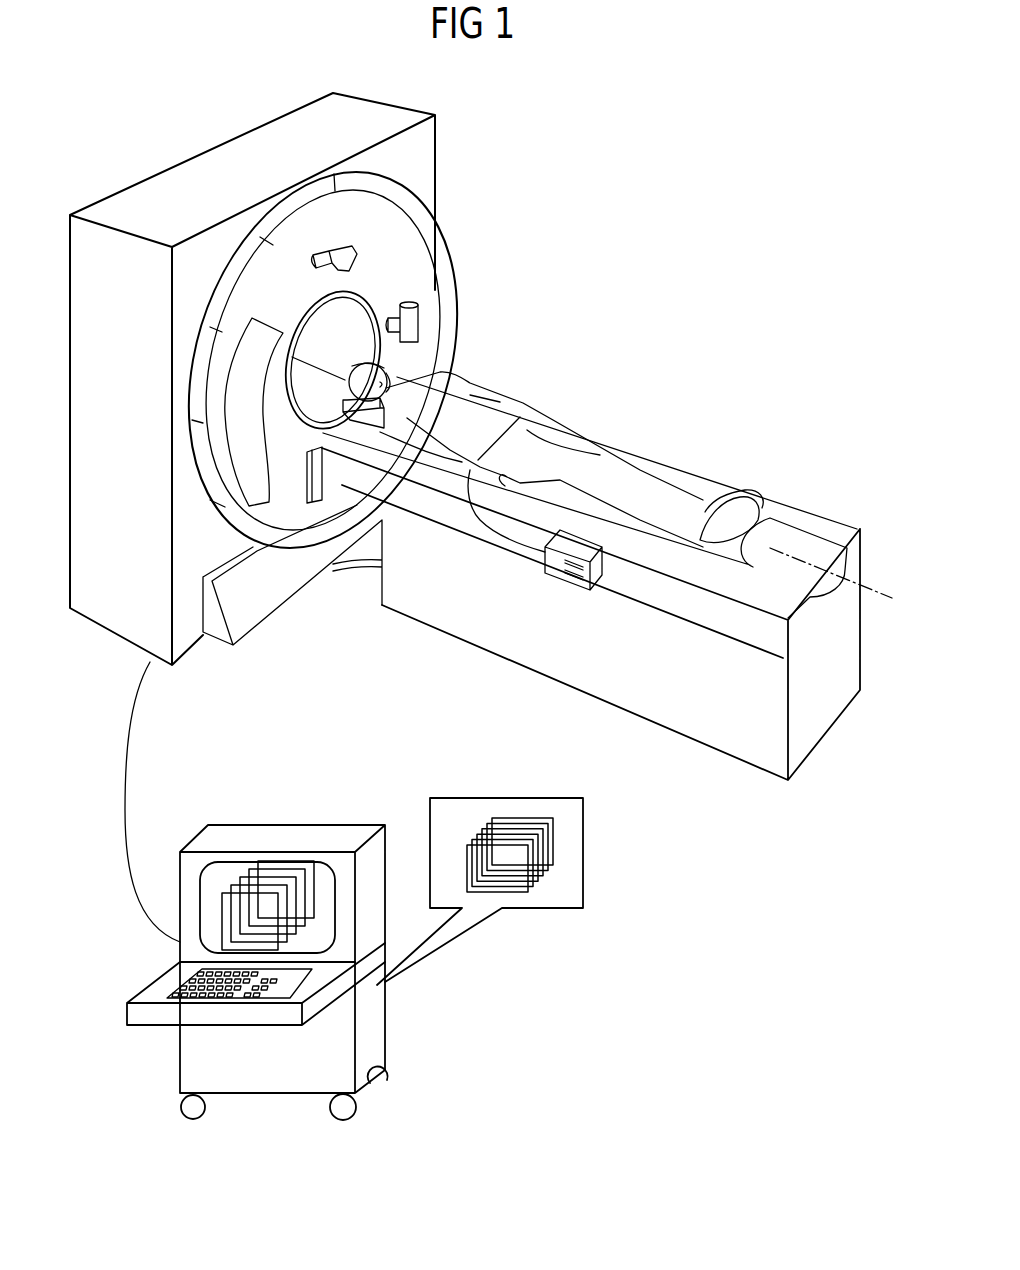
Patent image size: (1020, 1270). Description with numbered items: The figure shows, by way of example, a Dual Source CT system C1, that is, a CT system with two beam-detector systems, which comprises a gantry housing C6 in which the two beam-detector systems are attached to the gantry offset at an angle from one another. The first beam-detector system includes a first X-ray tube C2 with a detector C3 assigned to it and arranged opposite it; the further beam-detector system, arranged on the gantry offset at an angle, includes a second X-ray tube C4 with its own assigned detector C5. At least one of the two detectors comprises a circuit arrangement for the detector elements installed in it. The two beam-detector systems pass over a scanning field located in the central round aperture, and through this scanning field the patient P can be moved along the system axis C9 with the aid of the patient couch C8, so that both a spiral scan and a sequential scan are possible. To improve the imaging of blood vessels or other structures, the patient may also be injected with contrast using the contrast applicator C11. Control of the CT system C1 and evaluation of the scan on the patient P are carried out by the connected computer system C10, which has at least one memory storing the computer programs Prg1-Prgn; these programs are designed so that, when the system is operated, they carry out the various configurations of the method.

The Dual Source CT system C1 is at (370, 379).
The first X-ray tube C2 is at (360, 250).
The detector C3 is at (321, 487).
The second X-ray tube C4 is at (420, 323).
The detector C5 is at (261, 490).
The gantry housing C6 is at (98, 597).
The patient couch C8 is at (738, 738).
The system axis C9 is at (884, 595).
The computer system C10 is at (372, 1037).
The contrast applicator C11 is at (573, 592).
The patient P is at (452, 392).
The computer programs Prg1-Prgn is at (515, 893).